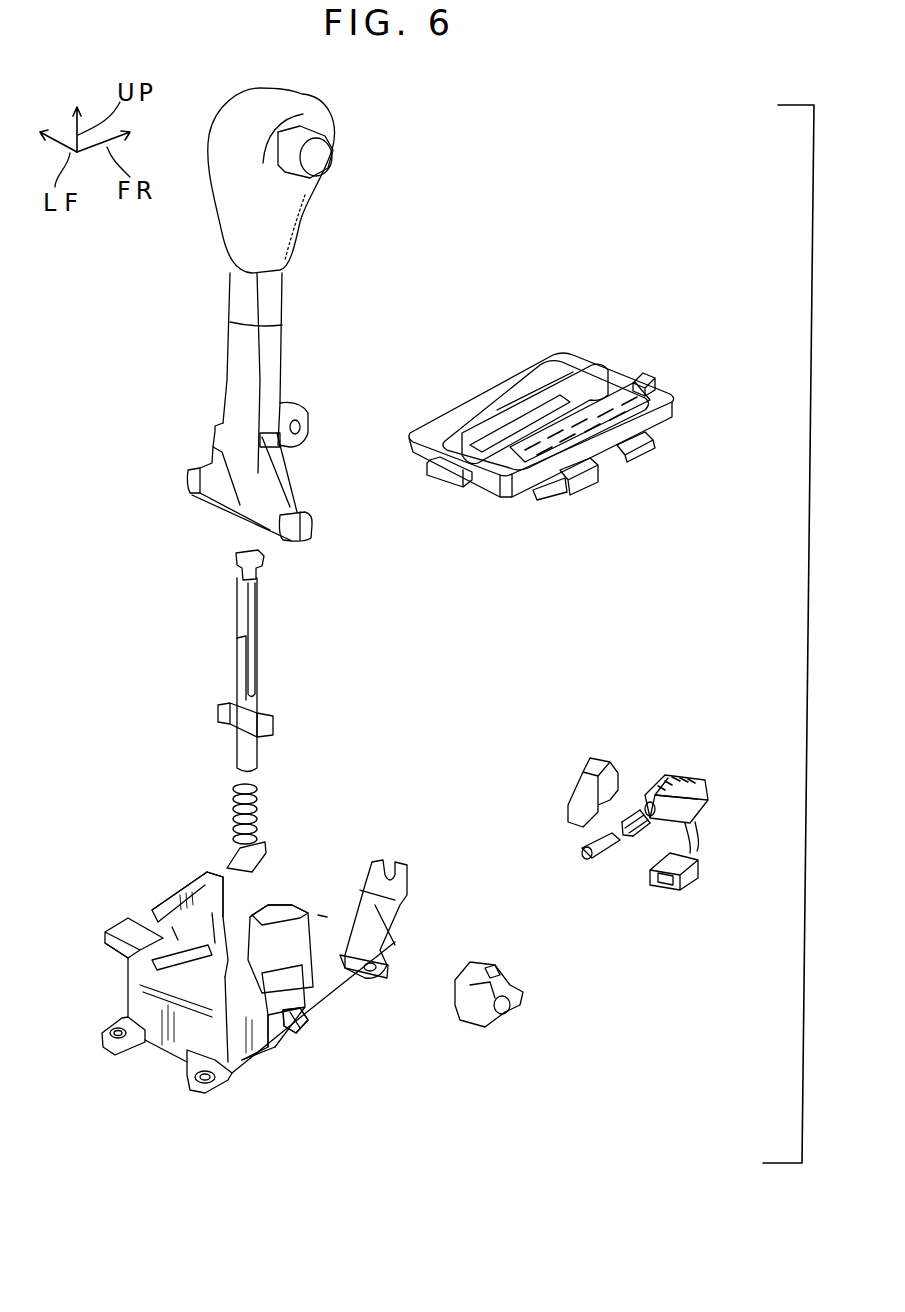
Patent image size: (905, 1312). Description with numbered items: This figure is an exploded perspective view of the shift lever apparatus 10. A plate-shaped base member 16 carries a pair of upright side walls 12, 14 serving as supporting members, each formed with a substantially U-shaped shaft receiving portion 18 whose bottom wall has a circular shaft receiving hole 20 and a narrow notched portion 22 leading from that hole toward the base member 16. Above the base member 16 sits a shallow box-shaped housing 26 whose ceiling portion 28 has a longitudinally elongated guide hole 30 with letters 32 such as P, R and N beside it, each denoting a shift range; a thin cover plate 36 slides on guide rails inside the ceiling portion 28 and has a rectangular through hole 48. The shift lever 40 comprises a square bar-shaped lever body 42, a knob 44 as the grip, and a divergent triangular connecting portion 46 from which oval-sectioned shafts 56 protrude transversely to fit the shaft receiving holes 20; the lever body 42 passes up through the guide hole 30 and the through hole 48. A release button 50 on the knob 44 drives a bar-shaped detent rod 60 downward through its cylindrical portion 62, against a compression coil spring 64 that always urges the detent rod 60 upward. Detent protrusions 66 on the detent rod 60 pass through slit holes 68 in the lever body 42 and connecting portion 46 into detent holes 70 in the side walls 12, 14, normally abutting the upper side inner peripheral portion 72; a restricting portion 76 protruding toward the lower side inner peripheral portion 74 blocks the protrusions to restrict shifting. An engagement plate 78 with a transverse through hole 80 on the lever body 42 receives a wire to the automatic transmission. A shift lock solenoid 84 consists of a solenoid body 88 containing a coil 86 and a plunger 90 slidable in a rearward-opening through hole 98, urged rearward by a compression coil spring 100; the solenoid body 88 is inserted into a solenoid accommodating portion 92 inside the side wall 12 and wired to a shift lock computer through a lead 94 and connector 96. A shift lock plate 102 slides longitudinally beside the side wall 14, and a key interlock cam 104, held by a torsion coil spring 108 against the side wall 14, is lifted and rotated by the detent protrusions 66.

The shift lever apparatus 10 is at (432, 206).
The side wall 12 is at (237, 1047).
The side wall 14 is at (127, 972).
The base member 16 is at (164, 1068).
The shaft receiving portion 18 is at (280, 1050).
The shaft receiving hole 20 is at (290, 1030).
The notched portion 22 is at (307, 1023).
The housing 26 is at (650, 357).
The ceiling portion 28 is at (587, 368).
The guide hole 30 is at (528, 410).
The letters 32 is at (648, 410).
The cover plate 36 is at (500, 437).
The shift lever 40 is at (306, 355).
The lever body 42 is at (268, 390).
The knob 44 is at (228, 212).
The connecting portion 46 is at (237, 520).
The through hole 48 is at (582, 380).
The release button 50 is at (370, 158).
The shafts 56 is at (192, 472).
The detent rod 60 is at (257, 663).
The cylindrical portion 62 is at (263, 560).
The compression coil spring 64 is at (257, 817).
The detent protrusions 66 is at (220, 713).
The slit holes 68 is at (297, 502).
The detent holes 70 is at (128, 920).
The upper side inner peripheral portion 72 is at (167, 893).
The lower side inner peripheral portion 74 is at (160, 965).
The restricting portion 76 is at (210, 870).
The engagement plate 78 is at (297, 450).
The through hole 80 is at (300, 428).
The shift lock solenoid 84 is at (694, 745).
The coil 86 is at (683, 782).
The solenoid body 88 is at (700, 798).
The plunger 90 is at (598, 853).
The solenoid accommodating portion 92 is at (393, 950).
The lead 94 is at (710, 813).
The connector 96 is at (690, 873).
The through hole 98 is at (650, 803).
The compression coil spring 100 is at (638, 803).
The shift lock plate 102 is at (587, 757).
The key interlock cam 104 is at (520, 992).
The torsion coil spring 108 is at (490, 973).